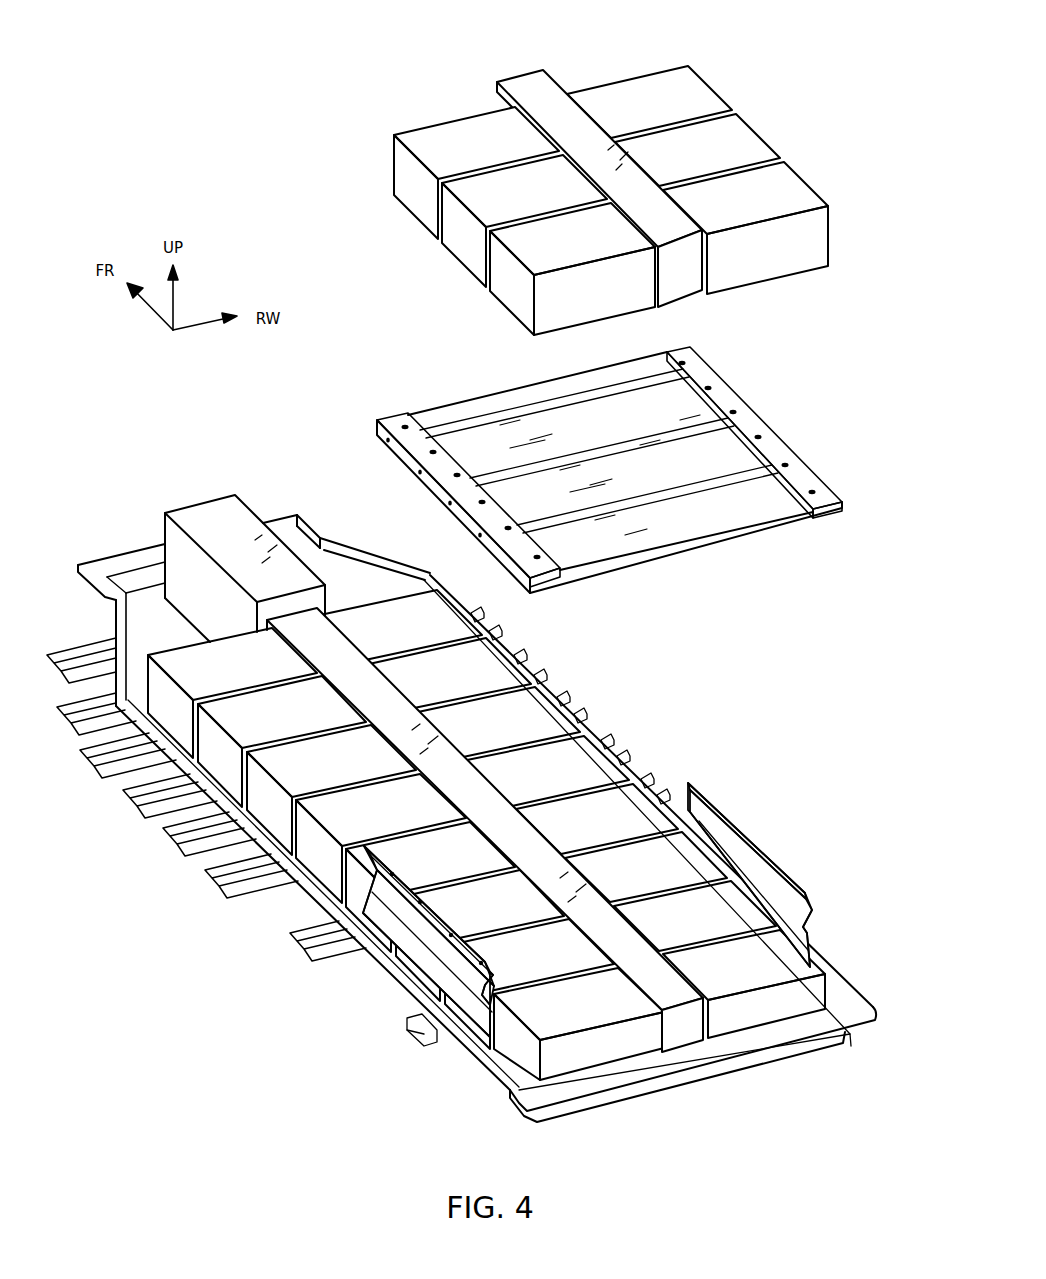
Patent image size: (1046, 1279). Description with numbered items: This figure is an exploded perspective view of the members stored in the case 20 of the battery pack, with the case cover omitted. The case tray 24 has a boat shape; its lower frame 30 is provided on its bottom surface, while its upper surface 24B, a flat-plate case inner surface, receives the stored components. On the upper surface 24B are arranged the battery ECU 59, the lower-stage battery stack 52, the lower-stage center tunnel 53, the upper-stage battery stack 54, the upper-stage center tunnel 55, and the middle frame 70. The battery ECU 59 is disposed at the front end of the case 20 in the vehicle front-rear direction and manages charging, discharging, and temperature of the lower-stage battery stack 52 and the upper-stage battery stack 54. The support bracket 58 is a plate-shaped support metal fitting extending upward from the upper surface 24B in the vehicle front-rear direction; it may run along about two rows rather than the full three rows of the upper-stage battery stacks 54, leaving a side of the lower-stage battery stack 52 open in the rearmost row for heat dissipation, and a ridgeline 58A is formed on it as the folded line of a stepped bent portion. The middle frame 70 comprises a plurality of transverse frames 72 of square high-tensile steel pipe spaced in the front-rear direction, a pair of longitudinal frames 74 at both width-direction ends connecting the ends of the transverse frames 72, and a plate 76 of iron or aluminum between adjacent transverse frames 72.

The case 20 is at (466, 789).
The case tray 24 is at (466, 789).
The upper surface 24B is at (152, 617).
The lower frame 30 is at (215, 895).
The lower-stage battery stack 52 is at (625, 813).
The lower-stage center tunnel 53 is at (385, 710).
The upper-stage battery stack 54 is at (647, 88).
The upper-stage center tunnel 55 is at (530, 83).
The support bracket 58 is at (538, 890).
The ridgeline 58A is at (440, 953).
The battery ECU 59 is at (217, 522).
The middle frame 70 is at (585, 474).
The transverse frame 72 is at (507, 400).
The longitudinal frame 74 is at (393, 418).
The plate 76 is at (675, 393).